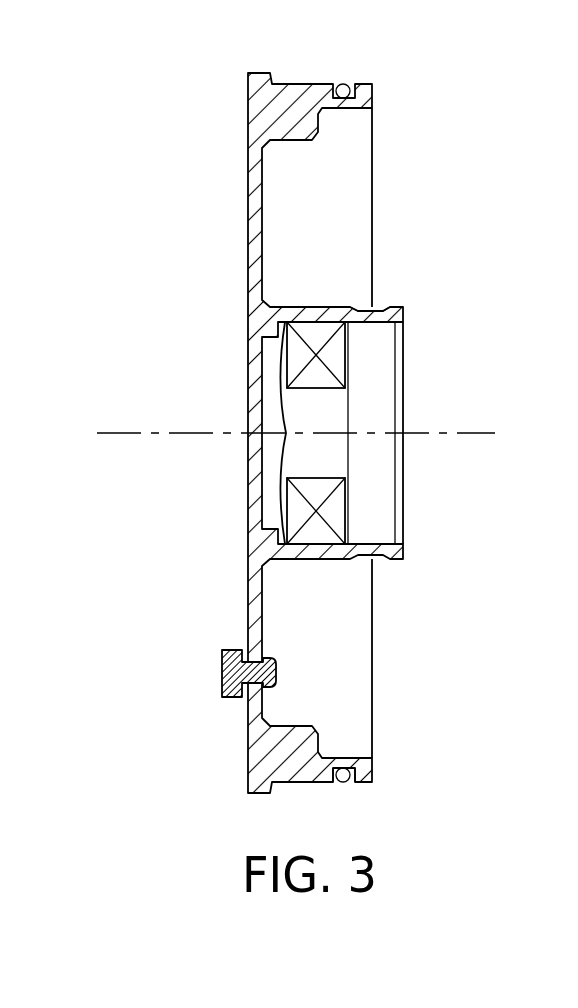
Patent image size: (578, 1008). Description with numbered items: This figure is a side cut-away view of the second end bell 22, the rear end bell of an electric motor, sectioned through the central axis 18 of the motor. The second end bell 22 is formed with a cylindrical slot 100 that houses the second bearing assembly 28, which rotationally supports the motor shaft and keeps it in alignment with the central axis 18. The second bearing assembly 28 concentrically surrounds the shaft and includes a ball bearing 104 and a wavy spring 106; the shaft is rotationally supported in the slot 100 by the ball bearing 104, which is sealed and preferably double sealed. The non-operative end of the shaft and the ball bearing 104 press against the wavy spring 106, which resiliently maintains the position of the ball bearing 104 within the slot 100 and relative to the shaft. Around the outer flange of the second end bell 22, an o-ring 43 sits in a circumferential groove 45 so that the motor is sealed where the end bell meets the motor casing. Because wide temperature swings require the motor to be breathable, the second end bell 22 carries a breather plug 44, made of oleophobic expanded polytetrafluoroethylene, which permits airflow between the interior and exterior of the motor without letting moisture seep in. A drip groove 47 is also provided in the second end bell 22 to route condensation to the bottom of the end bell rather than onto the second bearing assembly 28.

The central axis 18 is at (130, 432).
The second end bell 22 is at (258, 78).
The second bearing assembly 28 is at (250, 327).
The o-ring 43 is at (343, 782).
The breather plug 44 is at (222, 674).
The circumferential groove 45 is at (353, 765).
The drip groove 47 is at (377, 307).
The cylindrical slot 100 is at (425, 362).
The ball bearing 104 is at (343, 513).
The wavy spring 106 is at (280, 485).